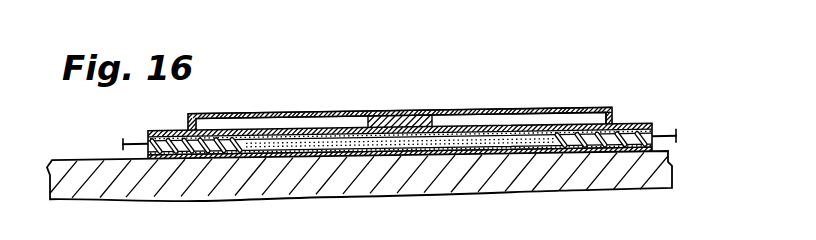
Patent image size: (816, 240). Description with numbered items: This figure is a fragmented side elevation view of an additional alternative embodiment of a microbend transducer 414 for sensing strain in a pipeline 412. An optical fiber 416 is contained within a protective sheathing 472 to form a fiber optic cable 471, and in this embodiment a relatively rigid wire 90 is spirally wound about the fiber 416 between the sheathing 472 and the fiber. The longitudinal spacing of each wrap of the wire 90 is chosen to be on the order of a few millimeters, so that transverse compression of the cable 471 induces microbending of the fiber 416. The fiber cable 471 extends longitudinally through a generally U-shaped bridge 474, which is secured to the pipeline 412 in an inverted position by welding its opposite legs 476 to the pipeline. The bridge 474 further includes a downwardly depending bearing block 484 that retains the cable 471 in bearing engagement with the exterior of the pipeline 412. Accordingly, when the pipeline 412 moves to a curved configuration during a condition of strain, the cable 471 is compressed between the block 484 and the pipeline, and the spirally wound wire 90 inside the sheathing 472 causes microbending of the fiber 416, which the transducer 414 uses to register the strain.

The pipeline 412 is at (550, 176).
The microbend transducer 414 is at (537, 72).
The optical fiber 416 is at (366, 140).
The fiber optic cable 471 is at (139, 132).
The protective sheathing 472 is at (290, 119).
The U-shaped bridge 474 is at (262, 113).
The legs 476 is at (620, 122).
The bearing block 484 is at (407, 116).
The wire 90 is at (563, 126).